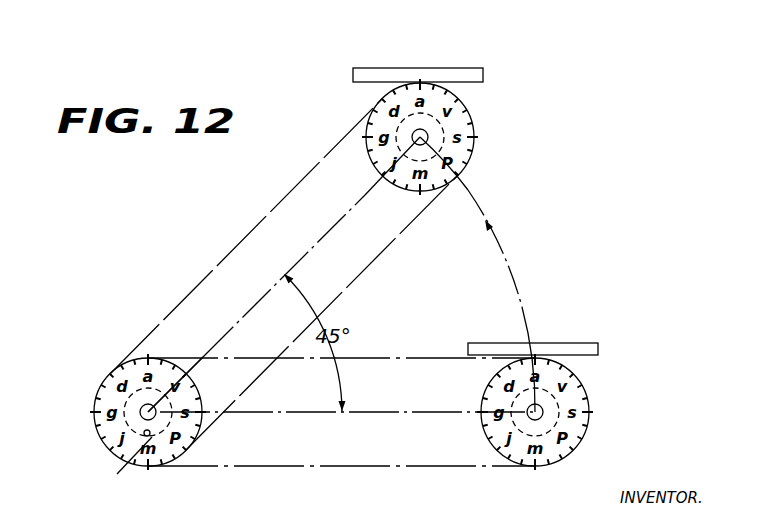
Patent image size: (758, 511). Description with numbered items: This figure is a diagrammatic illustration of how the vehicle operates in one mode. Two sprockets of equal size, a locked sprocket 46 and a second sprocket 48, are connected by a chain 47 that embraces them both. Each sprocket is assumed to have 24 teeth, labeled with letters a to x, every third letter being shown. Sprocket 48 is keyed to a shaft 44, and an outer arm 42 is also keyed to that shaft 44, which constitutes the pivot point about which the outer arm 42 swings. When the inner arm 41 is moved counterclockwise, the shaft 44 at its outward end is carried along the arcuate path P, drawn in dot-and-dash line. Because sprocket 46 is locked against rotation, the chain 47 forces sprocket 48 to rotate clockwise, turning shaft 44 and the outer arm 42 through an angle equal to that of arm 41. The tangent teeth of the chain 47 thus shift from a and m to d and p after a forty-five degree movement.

The locked sprocket 24 is at (100, 430).
The inner arm 41 is at (277, 291).
The outer arm 42 is at (475, 63).
The shaft 44 is at (428, 136).
The sprocket 46 is at (203, 404).
The chain 47 is at (395, 244).
The second sprocket 48 is at (484, 392).
The arcuate path P is at (510, 267).